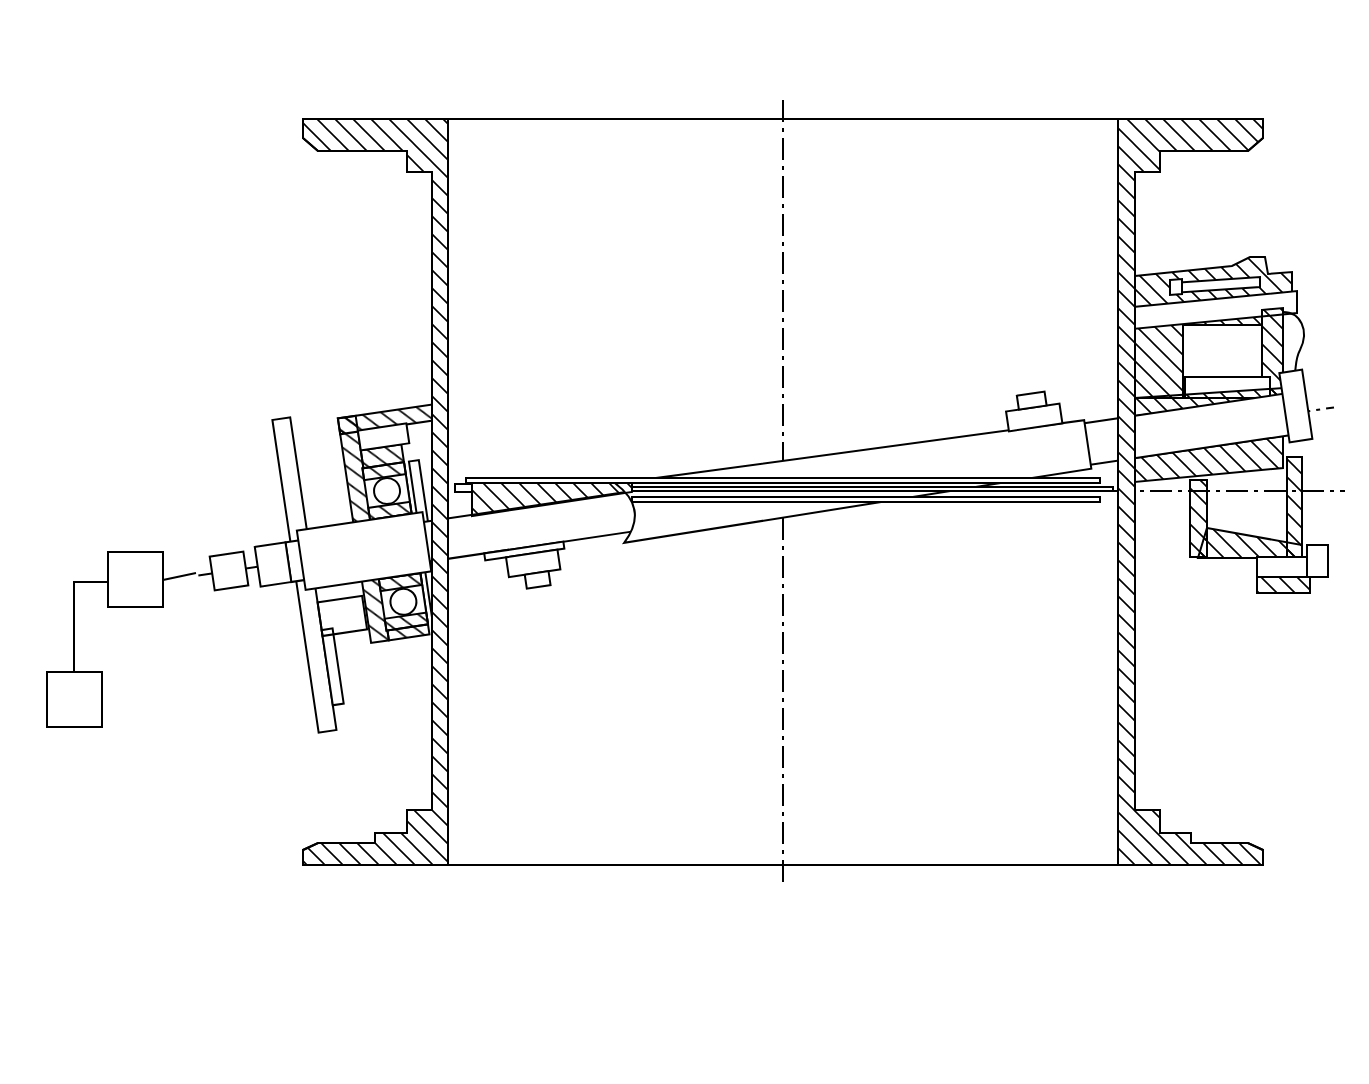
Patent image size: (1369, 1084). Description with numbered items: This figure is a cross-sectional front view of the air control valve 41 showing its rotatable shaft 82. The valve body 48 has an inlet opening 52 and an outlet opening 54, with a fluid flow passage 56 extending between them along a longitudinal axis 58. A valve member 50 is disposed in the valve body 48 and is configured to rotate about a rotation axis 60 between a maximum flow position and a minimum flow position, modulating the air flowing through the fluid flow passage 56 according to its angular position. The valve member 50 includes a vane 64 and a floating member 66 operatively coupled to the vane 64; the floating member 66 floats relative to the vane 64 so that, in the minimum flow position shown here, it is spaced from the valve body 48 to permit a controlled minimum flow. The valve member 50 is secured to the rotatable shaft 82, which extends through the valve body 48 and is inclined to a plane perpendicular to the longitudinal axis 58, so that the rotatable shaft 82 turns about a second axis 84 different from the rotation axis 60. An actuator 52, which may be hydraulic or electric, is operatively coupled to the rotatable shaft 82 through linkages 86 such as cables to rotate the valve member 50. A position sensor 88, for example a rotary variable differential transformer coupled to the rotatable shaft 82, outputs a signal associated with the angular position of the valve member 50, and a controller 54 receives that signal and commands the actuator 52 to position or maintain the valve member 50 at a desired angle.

The air control valve 41 is at (224, 95).
The valve body 48 is at (433, 235).
The valve member 50 is at (614, 448).
The actuator 52 is at (946, 865).
The controller 54 is at (938, 118).
The fluid flow passage 56 is at (636, 822).
The longitudinal axis 58 is at (776, 160).
The rotation axis 60 is at (1348, 493).
The vane 64 is at (975, 505).
The floating member 66 is at (1110, 500).
The rotatable shaft 82 is at (305, 578).
The second axis 84 is at (1320, 410).
The linkages 86 is at (192, 562).
The position sensor 88 is at (326, 572).